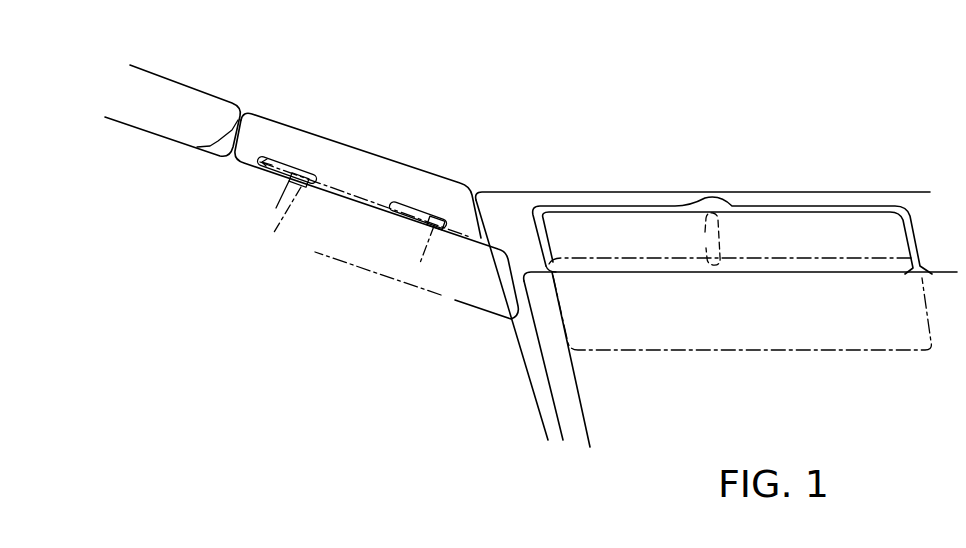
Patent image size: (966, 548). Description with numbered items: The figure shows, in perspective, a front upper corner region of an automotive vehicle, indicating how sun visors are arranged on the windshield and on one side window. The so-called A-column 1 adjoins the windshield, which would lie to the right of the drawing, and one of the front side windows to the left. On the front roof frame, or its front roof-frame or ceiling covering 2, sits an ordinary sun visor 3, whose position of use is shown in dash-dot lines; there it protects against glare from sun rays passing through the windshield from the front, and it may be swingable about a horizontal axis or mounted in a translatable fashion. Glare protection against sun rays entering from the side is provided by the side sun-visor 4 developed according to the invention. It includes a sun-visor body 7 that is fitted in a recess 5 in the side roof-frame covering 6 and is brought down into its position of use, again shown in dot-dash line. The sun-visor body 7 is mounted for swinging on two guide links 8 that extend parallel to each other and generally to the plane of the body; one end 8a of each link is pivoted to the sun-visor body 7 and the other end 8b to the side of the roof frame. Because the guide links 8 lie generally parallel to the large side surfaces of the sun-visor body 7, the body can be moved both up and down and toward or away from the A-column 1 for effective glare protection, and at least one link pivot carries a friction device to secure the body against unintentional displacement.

The A-column 1 is at (573, 398).
The front roof-frame or ceiling covering 2 is at (928, 192).
The sun visor 3 is at (852, 220).
The side sun-visor 4 is at (238, 174).
The recess 5 is at (197, 147).
The side roof-frame covering 6 is at (183, 98).
The sun-visor body 7 is at (362, 197).
The guide links 8 is at (273, 229).
The end of the link 8a is at (424, 270).
The end of the link 8b is at (425, 208).